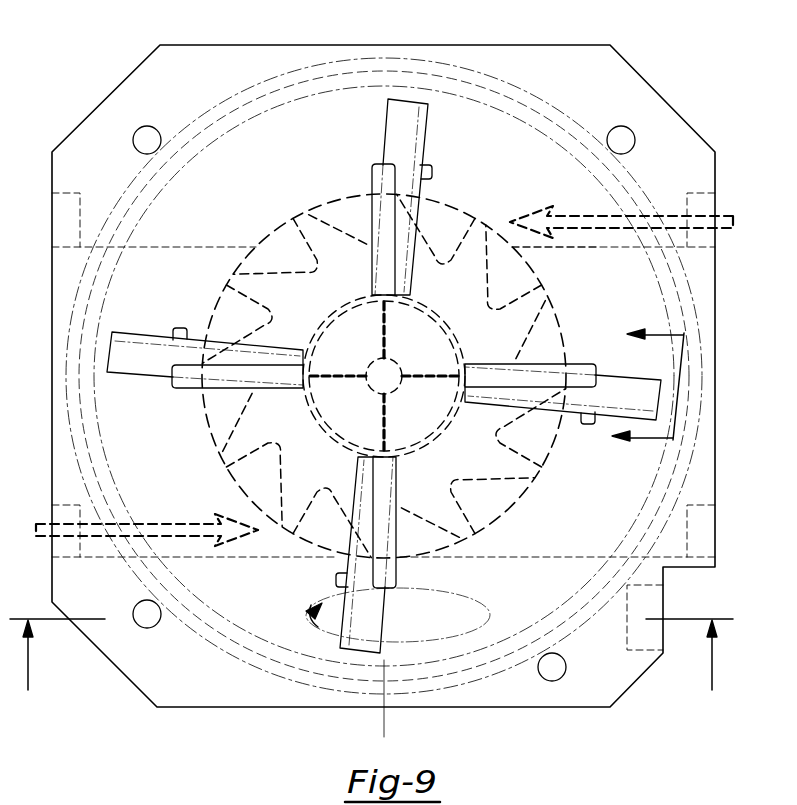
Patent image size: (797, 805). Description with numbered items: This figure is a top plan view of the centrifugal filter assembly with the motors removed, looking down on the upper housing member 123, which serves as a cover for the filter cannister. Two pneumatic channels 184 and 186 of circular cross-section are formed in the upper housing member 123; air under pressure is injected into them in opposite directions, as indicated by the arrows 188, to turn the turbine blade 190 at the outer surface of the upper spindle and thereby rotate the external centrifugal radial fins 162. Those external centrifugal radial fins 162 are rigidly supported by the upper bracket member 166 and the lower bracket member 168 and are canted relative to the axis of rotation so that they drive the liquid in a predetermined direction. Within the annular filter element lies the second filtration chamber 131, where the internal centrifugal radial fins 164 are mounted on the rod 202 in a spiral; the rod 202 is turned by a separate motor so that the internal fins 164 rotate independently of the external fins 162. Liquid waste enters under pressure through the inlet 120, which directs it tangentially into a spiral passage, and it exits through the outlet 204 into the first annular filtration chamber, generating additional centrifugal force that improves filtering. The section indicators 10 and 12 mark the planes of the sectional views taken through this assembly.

The section line 10- 10 is at (371, 671).
The section line 12- 12 is at (643, 389).
The inlet 120 is at (593, 649).
The upper housing member 123 is at (181, 53).
The second filtration chamber 131 is at (430, 326).
The external centrifugal radial fins 162 is at (134, 373).
The internal centrifugal radial fins 164 is at (383, 426).
The upper bracket member 166 is at (372, 173).
The lower bracket member 168 is at (180, 328).
The pneumatic channel 184 is at (232, 200).
The pneumatic channel 186 is at (576, 510).
The arrows 188 is at (727, 216).
The turbine blade 190 is at (478, 224).
The rod 202 is at (379, 367).
The outlet 204 is at (302, 618).